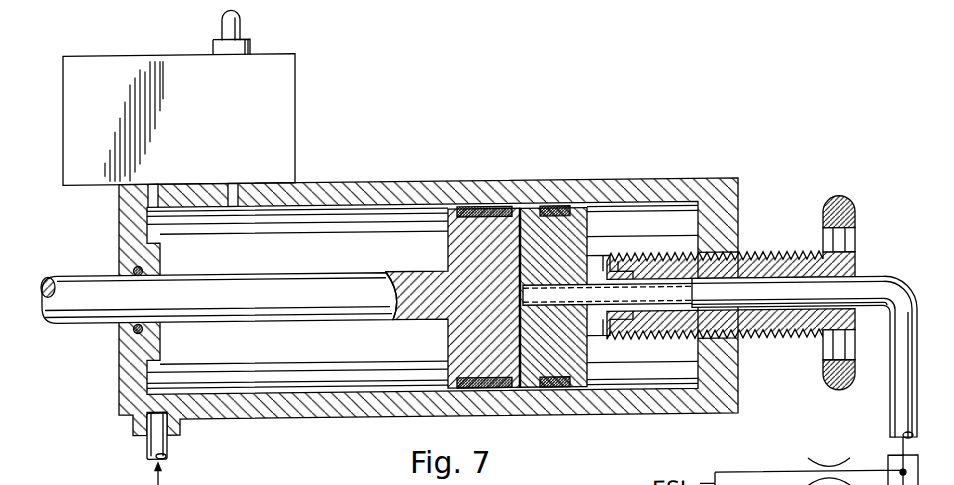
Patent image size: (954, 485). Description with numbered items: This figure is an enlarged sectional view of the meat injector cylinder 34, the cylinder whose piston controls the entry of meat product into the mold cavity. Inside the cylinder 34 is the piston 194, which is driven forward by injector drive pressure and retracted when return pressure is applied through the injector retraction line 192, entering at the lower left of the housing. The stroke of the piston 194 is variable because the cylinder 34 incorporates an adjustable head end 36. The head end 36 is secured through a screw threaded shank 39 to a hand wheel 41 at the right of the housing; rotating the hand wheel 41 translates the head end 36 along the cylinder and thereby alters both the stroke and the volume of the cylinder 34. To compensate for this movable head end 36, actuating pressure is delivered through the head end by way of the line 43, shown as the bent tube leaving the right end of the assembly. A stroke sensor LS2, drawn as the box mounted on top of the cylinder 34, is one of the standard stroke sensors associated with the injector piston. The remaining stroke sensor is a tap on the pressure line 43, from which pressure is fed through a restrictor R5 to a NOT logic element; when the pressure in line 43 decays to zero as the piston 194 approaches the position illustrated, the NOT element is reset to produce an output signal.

The stroke sensor LS2 is at (297, 105).
The injector cylinder 34 is at (655, 178).
The adjustable head end 36 is at (573, 222).
The screw threaded shank 39 is at (740, 261).
The hand wheel 41 is at (833, 206).
The pressure line 43 is at (898, 403).
The injector retraction line 192 is at (168, 449).
The piston 194 is at (453, 340).
The restrictor R5 is at (829, 461).